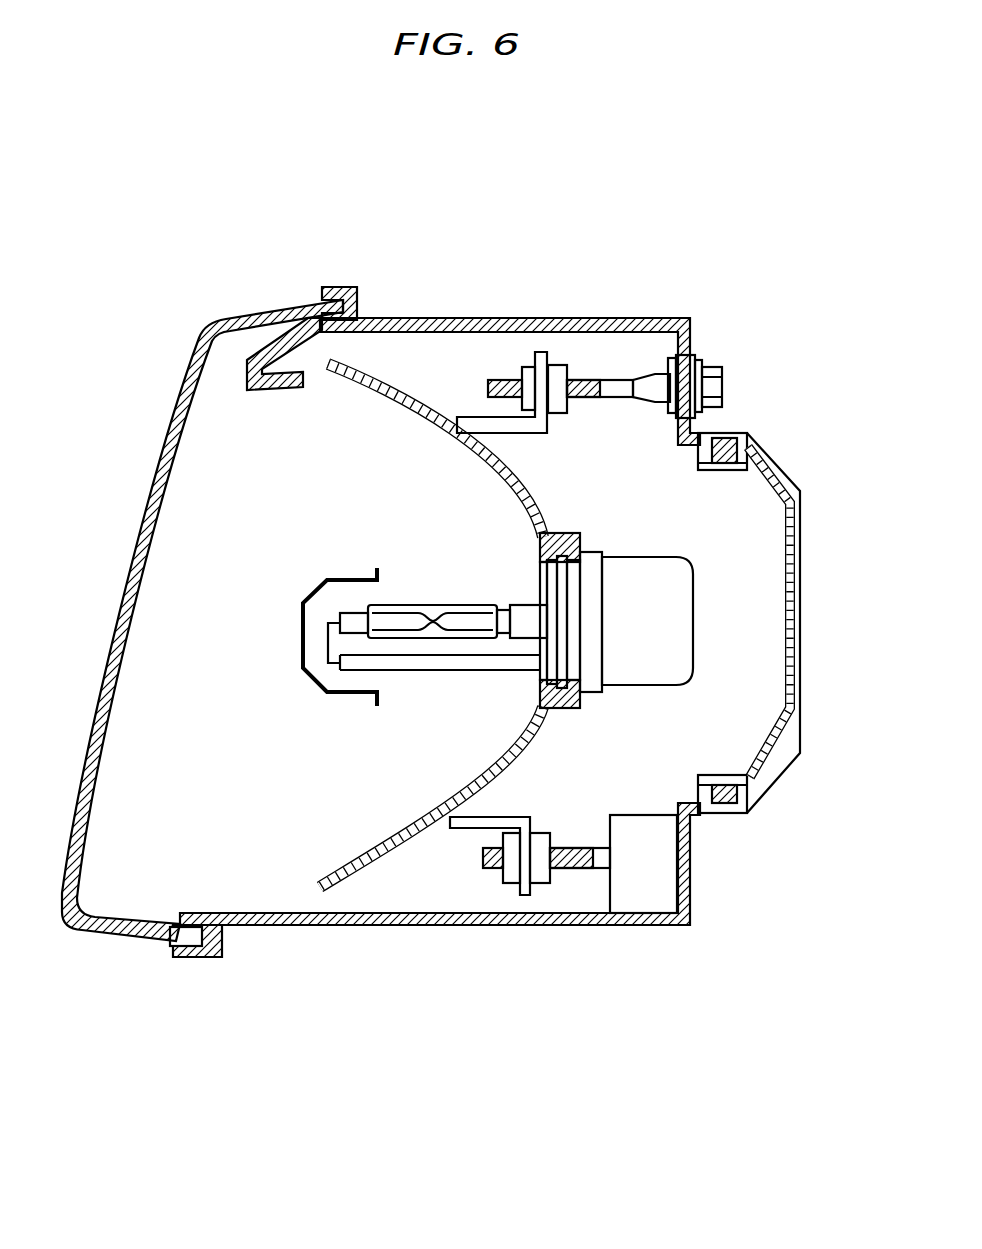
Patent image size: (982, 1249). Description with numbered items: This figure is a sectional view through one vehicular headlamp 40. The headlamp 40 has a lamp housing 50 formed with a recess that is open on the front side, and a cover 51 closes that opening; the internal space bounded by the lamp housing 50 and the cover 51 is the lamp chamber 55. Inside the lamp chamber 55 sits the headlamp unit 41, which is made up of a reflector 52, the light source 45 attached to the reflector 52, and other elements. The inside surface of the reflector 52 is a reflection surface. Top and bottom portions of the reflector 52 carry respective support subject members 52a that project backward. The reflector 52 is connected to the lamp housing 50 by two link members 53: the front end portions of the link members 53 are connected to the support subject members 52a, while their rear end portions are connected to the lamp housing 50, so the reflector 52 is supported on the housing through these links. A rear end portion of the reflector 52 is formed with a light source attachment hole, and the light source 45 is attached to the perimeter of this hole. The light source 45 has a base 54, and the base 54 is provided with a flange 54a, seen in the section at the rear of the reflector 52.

The vehicular headlamp 40 is at (778, 223).
The headlamp unit 41 is at (402, 898).
The light source 45 is at (460, 418).
The lamp housing 50 is at (535, 352).
The cover 51 is at (213, 315).
The reflector 52 is at (410, 603).
The support subject member 52a is at (487, 428).
The link member 53 is at (582, 380).
The base 54 is at (693, 620).
The flange 54a is at (792, 484).
The lamp chamber 55 is at (147, 595).